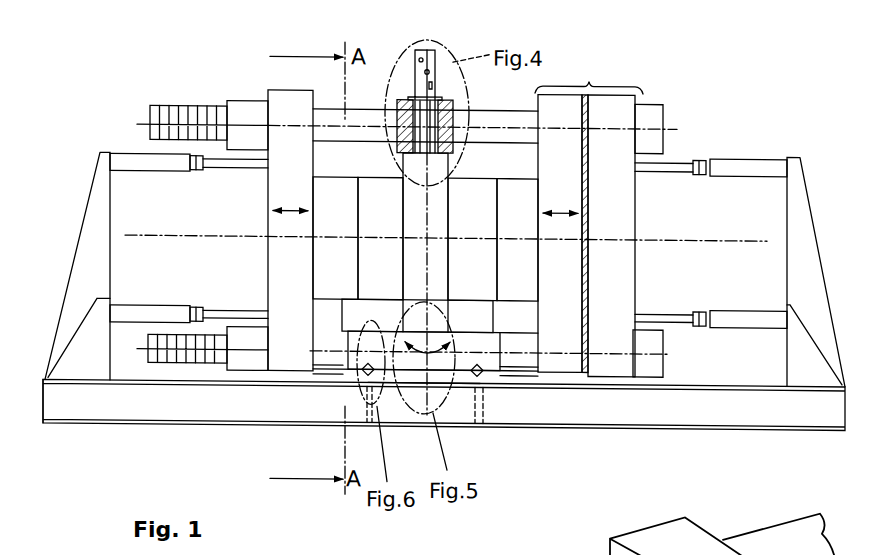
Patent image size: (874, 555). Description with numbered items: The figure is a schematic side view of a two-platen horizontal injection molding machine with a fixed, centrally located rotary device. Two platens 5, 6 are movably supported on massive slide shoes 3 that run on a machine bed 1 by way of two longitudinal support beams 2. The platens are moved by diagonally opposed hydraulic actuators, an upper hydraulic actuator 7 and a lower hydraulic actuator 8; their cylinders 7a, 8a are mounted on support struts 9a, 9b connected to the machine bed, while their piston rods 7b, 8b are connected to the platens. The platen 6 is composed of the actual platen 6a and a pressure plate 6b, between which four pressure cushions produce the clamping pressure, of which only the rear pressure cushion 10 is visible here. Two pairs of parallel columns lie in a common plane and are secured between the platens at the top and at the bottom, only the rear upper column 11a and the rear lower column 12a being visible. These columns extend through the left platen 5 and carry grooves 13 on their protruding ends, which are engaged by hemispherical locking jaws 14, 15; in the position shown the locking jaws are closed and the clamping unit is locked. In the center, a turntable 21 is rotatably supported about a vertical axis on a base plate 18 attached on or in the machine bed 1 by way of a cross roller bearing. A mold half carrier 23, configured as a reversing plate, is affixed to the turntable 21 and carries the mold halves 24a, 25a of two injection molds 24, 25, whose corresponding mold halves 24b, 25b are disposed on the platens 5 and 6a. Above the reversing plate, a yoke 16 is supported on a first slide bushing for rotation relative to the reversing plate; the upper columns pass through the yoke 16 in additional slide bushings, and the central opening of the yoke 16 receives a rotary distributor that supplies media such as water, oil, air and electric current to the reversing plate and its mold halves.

The machine bed 1 is at (792, 437).
The longitudinal support beams 2 is at (88, 414).
The slide shoes 3 is at (283, 372).
The platen 5 is at (298, 270).
The platen 6 is at (599, 213).
The actual platen 6a is at (572, 272).
The pressure plate 6b is at (622, 272).
The hydraulic actuator 7 is at (453, 151).
The cylinder 7a is at (169, 164).
The piston rod 7b is at (228, 166).
The hydraulic actuator 8 is at (448, 316).
The cylinder 8a is at (167, 315).
The piston rod 8b is at (230, 315).
The support strut 9a is at (100, 193).
The support strut 9b is at (93, 338).
The pressure cushion 10 is at (589, 193).
The column 11a is at (335, 135).
The column 12a is at (514, 377).
The grooves 13 is at (177, 130).
The locking jaw 14 is at (248, 112).
The locking jaw 15 is at (257, 137).
The yoke 16 is at (460, 108).
The base plate 18 is at (442, 384).
The turntable 21 is at (477, 330).
The mold half carrier 23 is at (438, 165).
The injection mold 24 is at (346, 320).
The mold half 24a is at (395, 230).
The mold half 24b is at (352, 230).
The injection mold 25 is at (511, 263).
The mold half 25a is at (485, 230).
The mold half 25b is at (530, 230).